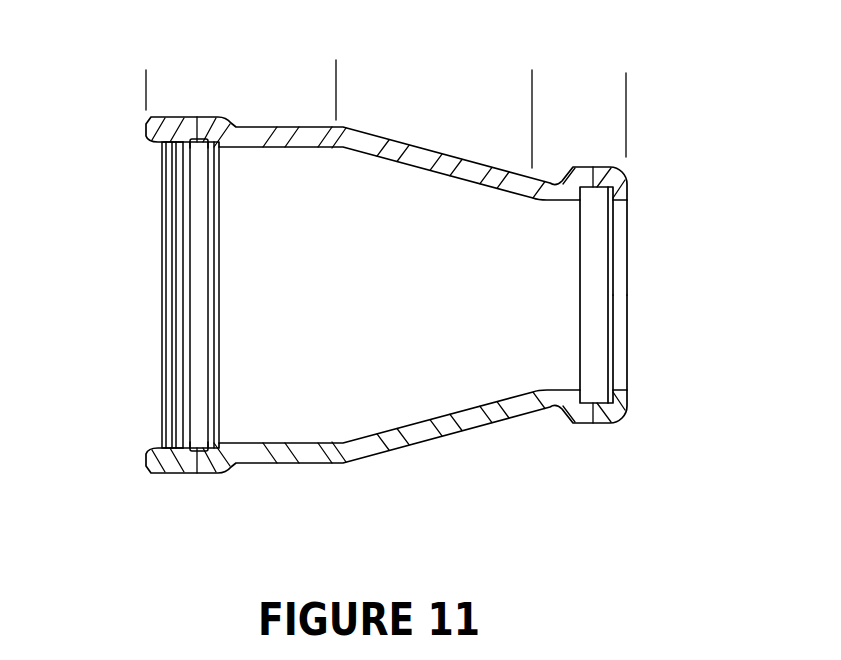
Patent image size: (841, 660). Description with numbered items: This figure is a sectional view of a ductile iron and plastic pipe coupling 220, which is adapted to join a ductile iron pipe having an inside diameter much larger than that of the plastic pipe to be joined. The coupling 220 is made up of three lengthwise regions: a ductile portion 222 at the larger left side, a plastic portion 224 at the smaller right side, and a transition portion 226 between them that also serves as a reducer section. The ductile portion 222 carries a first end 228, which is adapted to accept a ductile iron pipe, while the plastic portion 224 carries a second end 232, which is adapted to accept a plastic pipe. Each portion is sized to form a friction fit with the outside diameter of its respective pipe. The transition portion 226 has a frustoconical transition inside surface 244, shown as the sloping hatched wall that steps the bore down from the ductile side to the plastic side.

The ductile iron and plastic pipe coupling 220 is at (320, 487).
The ductile portion 222 is at (336, 90).
The plastic portion 224 is at (626, 90).
The transition portion 226 is at (532, 90).
The first end 228 is at (124, 302).
The second end 232 is at (647, 283).
The frustoconical transition inside surface 244 is at (430, 175).